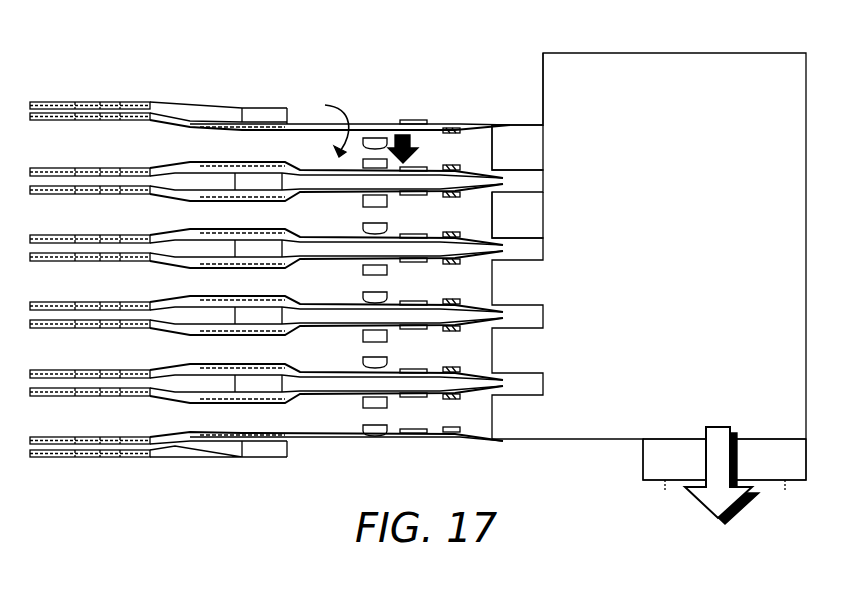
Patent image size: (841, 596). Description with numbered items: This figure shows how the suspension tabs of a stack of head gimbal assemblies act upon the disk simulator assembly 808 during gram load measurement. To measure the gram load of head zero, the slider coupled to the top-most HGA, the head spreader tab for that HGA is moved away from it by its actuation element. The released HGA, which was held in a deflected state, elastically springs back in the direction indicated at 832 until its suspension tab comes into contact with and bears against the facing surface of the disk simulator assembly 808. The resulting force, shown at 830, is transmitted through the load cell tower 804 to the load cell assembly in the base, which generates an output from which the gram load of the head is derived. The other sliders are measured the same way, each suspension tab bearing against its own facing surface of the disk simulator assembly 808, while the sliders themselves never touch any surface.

The disk simulator assembly 808 is at (711, 53).
The direction of HGA movement 832 is at (417, 151).
The load cell tower 804 is at (643, 462).
The exerted force 830 is at (705, 510).